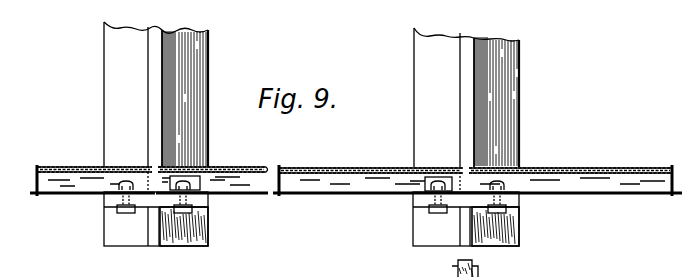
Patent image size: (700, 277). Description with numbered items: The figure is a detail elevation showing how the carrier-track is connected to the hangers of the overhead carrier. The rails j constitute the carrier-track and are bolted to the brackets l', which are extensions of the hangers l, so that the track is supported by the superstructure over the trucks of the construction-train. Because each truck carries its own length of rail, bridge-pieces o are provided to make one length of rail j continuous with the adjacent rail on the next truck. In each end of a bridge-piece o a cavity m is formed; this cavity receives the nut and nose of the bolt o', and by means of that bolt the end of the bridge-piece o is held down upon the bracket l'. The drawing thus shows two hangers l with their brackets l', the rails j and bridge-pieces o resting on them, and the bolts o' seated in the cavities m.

The hanger l is at (311, 94).
The bracket l' is at (317, 222).
The bolt o' is at (339, 241).
The rail j is at (61, 178).
The bridge-piece o is at (311, 186).
The cavity m is at (195, 182).